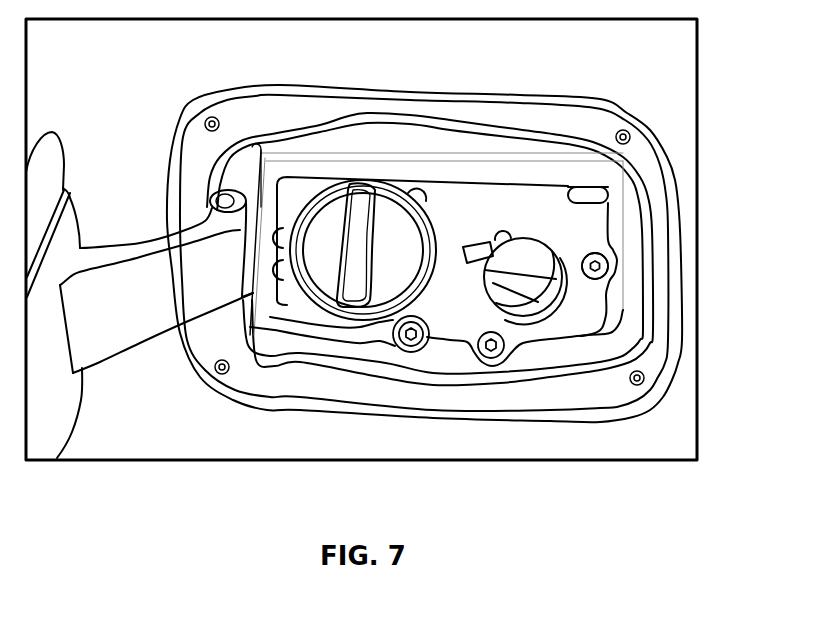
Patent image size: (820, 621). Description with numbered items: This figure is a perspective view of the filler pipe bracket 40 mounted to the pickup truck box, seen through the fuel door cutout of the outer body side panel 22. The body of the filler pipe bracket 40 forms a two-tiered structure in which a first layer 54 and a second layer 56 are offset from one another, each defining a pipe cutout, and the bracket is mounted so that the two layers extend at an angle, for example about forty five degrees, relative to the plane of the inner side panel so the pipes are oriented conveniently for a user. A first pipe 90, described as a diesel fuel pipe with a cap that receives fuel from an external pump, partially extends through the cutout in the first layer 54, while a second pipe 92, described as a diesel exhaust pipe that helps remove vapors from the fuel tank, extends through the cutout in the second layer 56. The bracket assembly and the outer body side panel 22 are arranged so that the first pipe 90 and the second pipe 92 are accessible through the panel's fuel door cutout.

The outer body side panel 22 is at (655, 67).
The first layer 54 is at (597, 222).
The filler pipe bracket 40 is at (586, 249).
The second pipe 92 is at (553, 333).
The second layer 56 is at (283, 305).
The first pipe 90 is at (377, 305).